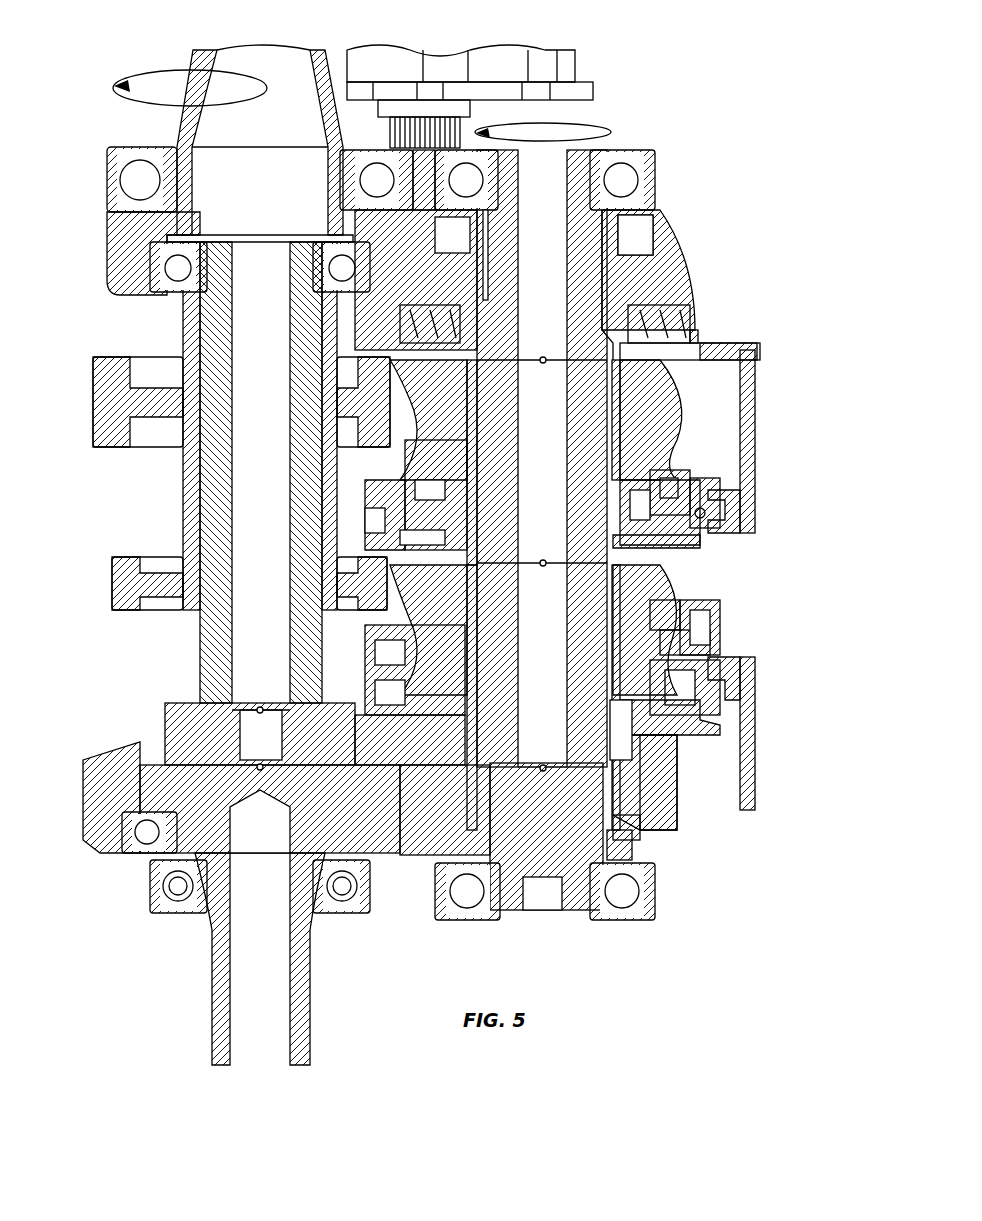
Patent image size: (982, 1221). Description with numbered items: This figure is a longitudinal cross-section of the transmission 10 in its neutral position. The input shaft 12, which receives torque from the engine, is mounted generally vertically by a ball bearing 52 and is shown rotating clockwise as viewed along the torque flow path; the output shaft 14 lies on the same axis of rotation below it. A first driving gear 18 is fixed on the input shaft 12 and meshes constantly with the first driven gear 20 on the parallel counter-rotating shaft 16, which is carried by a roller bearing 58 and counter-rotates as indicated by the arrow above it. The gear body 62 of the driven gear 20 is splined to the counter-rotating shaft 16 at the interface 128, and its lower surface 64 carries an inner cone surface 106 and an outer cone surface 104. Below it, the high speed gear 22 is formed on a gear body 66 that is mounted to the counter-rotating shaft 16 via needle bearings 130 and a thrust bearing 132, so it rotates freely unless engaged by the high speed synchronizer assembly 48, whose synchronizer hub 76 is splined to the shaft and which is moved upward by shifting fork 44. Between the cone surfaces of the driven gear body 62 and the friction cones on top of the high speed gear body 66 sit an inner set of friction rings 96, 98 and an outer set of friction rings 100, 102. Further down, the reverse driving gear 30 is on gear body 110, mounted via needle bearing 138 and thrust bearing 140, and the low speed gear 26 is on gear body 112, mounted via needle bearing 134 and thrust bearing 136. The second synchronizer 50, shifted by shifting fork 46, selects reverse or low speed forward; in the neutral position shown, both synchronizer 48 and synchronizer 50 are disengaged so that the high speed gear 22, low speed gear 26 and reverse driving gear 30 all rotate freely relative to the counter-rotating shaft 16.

The transmission 10 is at (92, 112).
The input shaft 12 is at (193, 65).
The output shaft 14 is at (210, 988).
The counter-rotating shaft 16 is at (585, 155).
The first driving gear 18 is at (112, 228).
The first driven gear 20 is at (695, 262).
The high speed gear 22 is at (757, 423).
The low speed gear 26 is at (672, 817).
The reverse driving gear 30 is at (662, 577).
The shifting fork 44 is at (733, 537).
The shifting fork 46 is at (732, 697).
The high speed synchronizer assembly 48 is at (723, 548).
The synchronizer 50 is at (717, 715).
The ball bearing 52 is at (107, 168).
The roller bearing 58 is at (655, 160).
The gear body 62 is at (680, 240).
The lower surface 64 is at (695, 335).
The gear body 66 is at (625, 442).
The synchronizer hub 76 is at (665, 537).
The inner friction ring 96 is at (665, 385).
The inner friction ring 98 is at (670, 352).
The outer friction ring 100 is at (693, 343).
The outer friction ring 102 is at (758, 348).
The outer cone surface 104 is at (680, 310).
The inner cone surface 106 is at (690, 330).
The gear body 110 is at (665, 608).
The gear body 112 is at (663, 782).
The splined interface 128 is at (485, 262).
The needle bearings 130 is at (657, 455).
The thrust bearing 132 is at (723, 490).
The needle bearing 134 is at (642, 813).
The thrust bearing 136 is at (617, 833).
The needle bearing 138 is at (677, 623).
The thrust bearing 140 is at (695, 642).